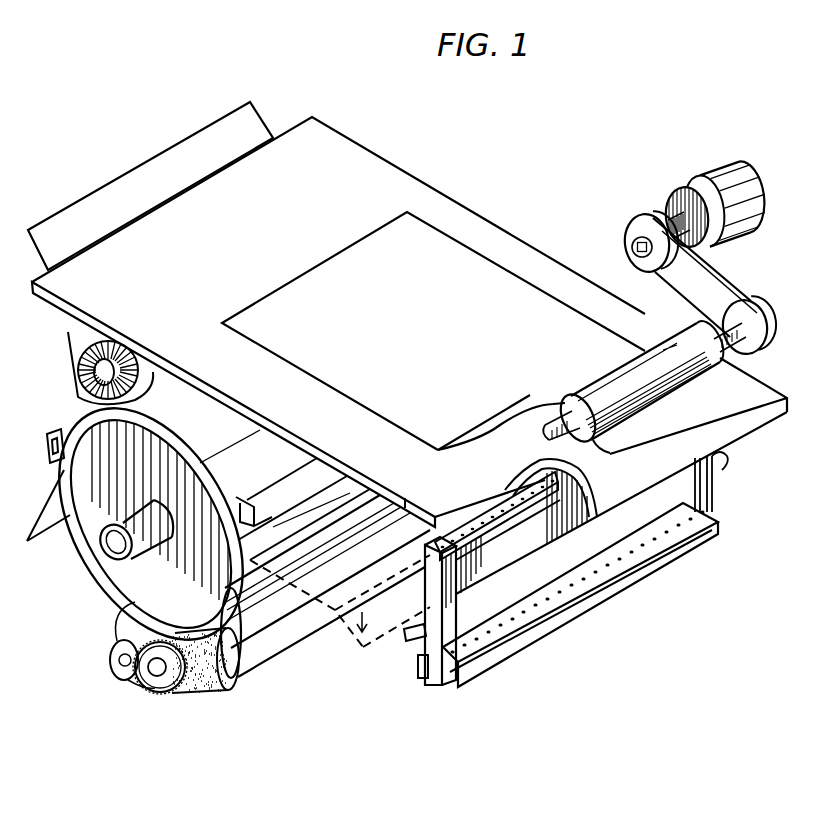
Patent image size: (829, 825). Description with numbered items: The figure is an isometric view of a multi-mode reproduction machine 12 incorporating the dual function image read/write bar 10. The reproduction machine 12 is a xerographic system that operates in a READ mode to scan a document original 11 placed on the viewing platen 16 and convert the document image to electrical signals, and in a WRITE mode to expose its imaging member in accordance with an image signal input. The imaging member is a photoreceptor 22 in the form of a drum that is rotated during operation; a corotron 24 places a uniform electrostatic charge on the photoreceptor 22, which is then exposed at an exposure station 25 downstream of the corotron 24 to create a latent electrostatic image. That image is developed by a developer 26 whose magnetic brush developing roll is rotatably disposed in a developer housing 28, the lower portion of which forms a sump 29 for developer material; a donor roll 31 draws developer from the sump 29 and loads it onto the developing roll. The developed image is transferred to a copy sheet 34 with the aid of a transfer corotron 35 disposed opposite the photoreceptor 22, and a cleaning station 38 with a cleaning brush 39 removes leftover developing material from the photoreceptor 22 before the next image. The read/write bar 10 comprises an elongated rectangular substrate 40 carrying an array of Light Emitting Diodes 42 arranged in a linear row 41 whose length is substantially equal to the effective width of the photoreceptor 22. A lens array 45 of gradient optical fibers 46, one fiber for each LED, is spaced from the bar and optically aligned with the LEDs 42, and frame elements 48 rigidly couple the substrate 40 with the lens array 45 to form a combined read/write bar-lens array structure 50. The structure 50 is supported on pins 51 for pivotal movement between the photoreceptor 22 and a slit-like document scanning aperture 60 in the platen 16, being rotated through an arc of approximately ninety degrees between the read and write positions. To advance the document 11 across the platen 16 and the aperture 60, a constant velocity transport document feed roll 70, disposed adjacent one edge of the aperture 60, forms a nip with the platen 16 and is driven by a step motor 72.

The dual function image read/write bar 10 is at (662, 584).
The document original 11 is at (520, 313).
The reproduction machine 12 is at (341, 110).
The viewing platen 16 is at (505, 240).
The photoreceptor 22 is at (83, 428).
The corotron 24 is at (263, 505).
The exposure station 25 is at (257, 600).
The developer 26 is at (163, 697).
The developer housing 28 is at (145, 692).
The sump 29 is at (203, 694).
The donor roll 31 is at (128, 680).
The copy sheet 34 is at (55, 524).
The transfer corotron 35 is at (47, 447).
The cleaning station 38 is at (212, 428).
The cleaning brush 39 is at (123, 337).
The substrate 40 is at (463, 680).
The linear row 41 is at (580, 588).
The Light Emitting Diodes 42 is at (478, 638).
The lens array 45 is at (410, 568).
The optical fibers 46 is at (487, 513).
The frame elements 48 is at (428, 679).
The read/write bar-lens array structure 50 is at (556, 563).
The pins 51 is at (408, 637).
The document scanning aperture 60 is at (418, 490).
The document feed roll 70 is at (623, 378).
The step motor 72 is at (696, 185).